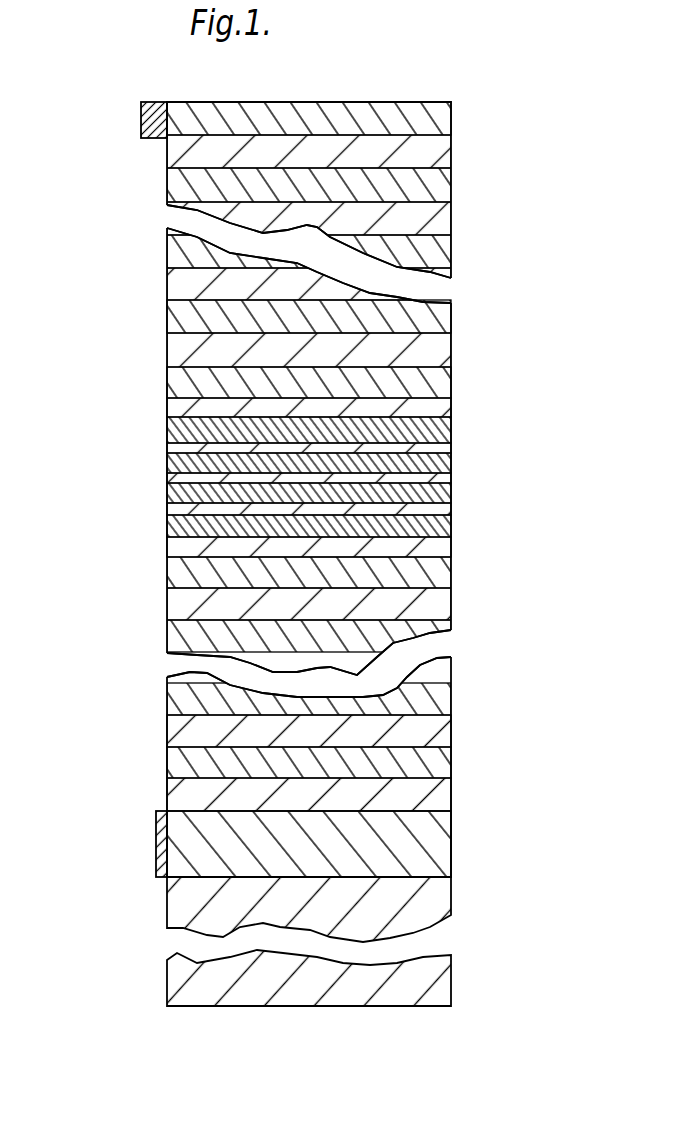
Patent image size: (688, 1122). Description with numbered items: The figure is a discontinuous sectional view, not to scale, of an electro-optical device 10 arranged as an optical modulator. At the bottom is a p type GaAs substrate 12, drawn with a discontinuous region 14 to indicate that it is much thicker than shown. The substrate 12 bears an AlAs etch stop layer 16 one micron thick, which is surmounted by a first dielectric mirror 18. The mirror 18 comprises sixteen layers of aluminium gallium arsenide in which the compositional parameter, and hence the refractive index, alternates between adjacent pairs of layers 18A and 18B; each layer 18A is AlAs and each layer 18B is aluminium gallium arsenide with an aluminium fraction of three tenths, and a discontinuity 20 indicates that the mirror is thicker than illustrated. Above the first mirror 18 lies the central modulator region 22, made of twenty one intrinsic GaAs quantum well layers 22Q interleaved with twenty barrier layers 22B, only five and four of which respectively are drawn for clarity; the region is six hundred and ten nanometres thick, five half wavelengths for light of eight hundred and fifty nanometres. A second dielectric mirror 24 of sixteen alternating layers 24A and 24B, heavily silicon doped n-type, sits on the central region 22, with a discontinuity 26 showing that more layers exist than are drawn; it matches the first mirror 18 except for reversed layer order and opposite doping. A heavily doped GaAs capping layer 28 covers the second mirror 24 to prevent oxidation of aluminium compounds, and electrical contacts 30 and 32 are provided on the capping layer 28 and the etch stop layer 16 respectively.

The electro-optical device 10 is at (300, 554).
The substrate 12 is at (445, 978).
The discontinuous region 14 is at (448, 937).
The etch stop layer 16 is at (445, 840).
The first dielectric mirror 18 is at (321, 684).
The layer 18A is at (167, 734).
The layer 18B is at (167, 701).
The discontinuity 20 is at (170, 666).
The central modulator region 22 is at (292, 477).
The barrier layer 22B is at (167, 461).
The quantum well layer 22Q is at (167, 447).
The second dielectric mirror 24 is at (318, 266).
The layer 24A is at (167, 288).
The layer 24B is at (167, 318).
The discontinuity 26 is at (167, 219).
The capping layer 28 is at (451, 120).
The electrical contact 30 is at (141, 119).
The electrical contact 32 is at (156, 845).